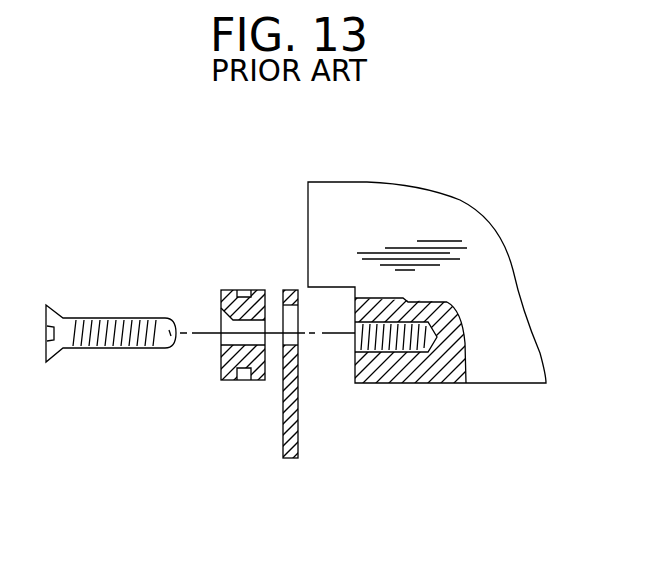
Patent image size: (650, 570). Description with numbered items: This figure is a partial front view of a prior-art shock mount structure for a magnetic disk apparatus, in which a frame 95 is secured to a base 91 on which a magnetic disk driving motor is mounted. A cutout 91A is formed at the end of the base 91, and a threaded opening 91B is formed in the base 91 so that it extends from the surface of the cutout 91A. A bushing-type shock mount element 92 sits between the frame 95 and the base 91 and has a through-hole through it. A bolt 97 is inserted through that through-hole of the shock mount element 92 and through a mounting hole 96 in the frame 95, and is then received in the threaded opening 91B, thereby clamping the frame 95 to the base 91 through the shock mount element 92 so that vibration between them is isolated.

The base 91 is at (497, 258).
The cutout 91A is at (332, 352).
The threaded opening 91B is at (408, 352).
The bushing-type shock mount element 92 is at (246, 297).
The frame 95 is at (291, 459).
The mounting hole 96 is at (288, 347).
The bolt 97 is at (121, 320).